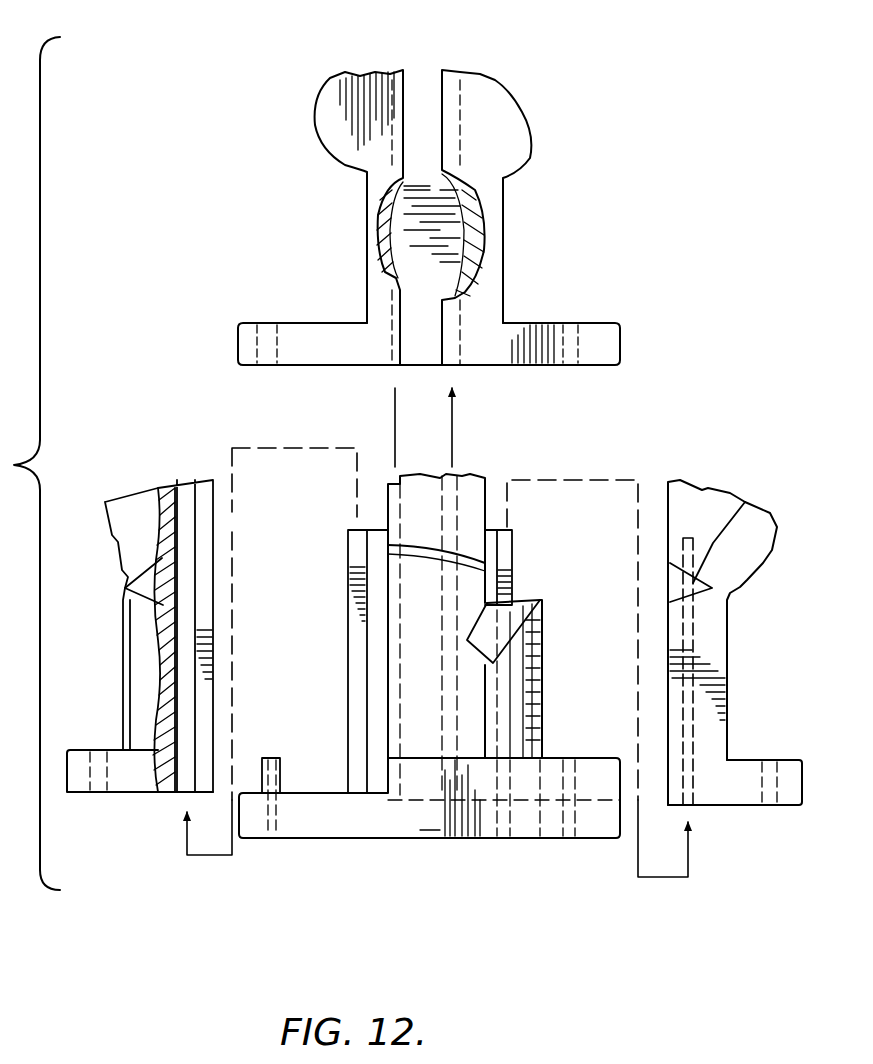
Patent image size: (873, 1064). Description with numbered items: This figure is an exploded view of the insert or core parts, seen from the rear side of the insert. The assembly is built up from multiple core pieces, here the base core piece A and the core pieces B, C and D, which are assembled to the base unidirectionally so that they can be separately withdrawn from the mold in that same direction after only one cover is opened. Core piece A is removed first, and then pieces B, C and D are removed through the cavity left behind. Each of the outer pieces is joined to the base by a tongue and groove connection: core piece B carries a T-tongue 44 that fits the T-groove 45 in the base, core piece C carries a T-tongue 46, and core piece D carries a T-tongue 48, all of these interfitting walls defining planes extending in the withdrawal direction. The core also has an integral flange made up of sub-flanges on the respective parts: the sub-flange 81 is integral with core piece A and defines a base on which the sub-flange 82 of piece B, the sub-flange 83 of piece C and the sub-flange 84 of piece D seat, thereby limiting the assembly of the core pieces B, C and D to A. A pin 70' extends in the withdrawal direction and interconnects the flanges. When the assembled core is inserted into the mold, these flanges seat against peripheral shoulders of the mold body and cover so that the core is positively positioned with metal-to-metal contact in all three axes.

The core piece D is at (530, 98).
The T-tongue 48 is at (428, 250).
The sub-flange 84 is at (560, 325).
The T-tongue 46 is at (508, 547).
The T-tongue 44 is at (355, 675).
The sub-flange 81 is at (528, 820).
The core piece A is at (425, 832).
The pin 70' is at (278, 758).
The core piece B is at (120, 612).
The T-groove 45 is at (185, 521).
The sub-flange 82 is at (88, 750).
The core piece C is at (787, 540).
The sub-flange 83 is at (795, 760).